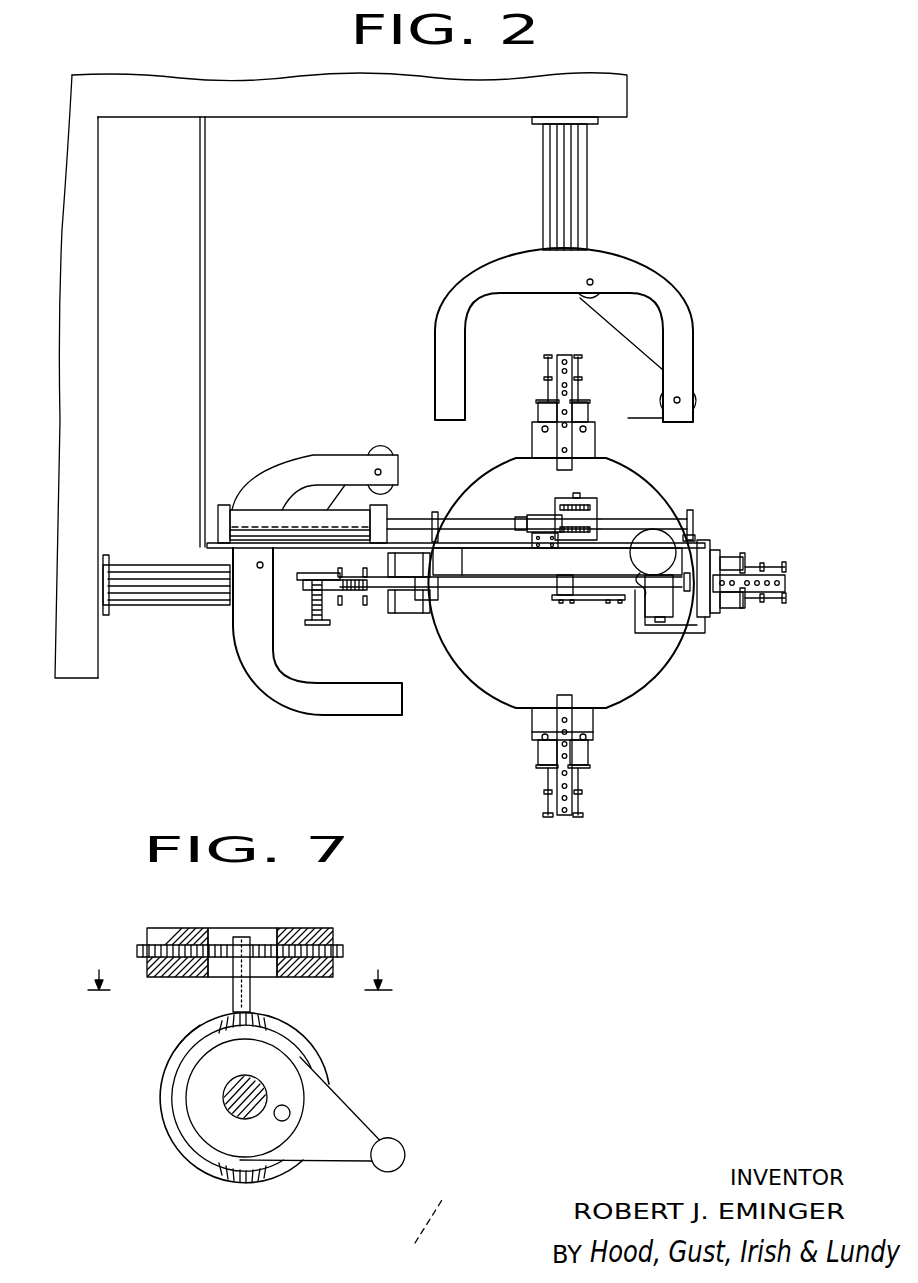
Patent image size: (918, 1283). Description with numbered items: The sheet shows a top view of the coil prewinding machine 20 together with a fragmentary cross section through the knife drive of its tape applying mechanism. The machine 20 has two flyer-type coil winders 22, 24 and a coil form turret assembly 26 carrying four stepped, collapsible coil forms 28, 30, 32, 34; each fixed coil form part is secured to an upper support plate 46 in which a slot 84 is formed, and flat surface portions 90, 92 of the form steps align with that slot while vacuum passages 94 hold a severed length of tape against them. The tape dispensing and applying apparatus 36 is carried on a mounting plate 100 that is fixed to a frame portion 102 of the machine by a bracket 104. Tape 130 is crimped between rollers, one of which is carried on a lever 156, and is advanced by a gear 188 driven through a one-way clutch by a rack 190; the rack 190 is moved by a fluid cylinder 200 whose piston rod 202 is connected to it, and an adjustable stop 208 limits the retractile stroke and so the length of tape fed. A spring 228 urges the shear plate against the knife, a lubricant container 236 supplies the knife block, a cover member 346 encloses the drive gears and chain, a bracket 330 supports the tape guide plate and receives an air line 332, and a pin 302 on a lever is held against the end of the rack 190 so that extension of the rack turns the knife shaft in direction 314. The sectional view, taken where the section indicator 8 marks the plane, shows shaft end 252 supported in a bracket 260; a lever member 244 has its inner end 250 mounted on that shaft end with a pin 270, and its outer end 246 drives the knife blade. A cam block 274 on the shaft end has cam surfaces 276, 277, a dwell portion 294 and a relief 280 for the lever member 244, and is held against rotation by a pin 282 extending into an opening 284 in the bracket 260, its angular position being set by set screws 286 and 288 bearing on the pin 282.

In FIG. 2, the machine 20 is at (292, 193).
In FIG. 2, the frame portion 102 is at (372, 115).
In FIG. 2, the bracket 104 is at (207, 282).
In FIG. 2, the flyer-type coil winder 24 is at (676, 246).
In FIG. 2, the coil form 34 is at (606, 429).
In FIG. 2, the coil form turret assembly 26 is at (470, 700).
In FIG. 2, the upper support plate 46 is at (650, 680).
In FIG. 2, the mounting plate 100 is at (477, 540).
In FIG. 2, the rack 190 is at (632, 518).
In FIG. 2, the pin 302 is at (693, 510).
In FIG. 2, the stop 208 is at (440, 512).
In FIG. 2, the gear 188 is at (597, 496).
In FIG. 2, the cover member 346 is at (548, 574).
In FIG. 2, the tape 130 is at (498, 588).
In FIG. 2, the tape dispensing and applying apparatus 36 is at (528, 606).
In FIG. 2, the lever 156 is at (592, 600).
In FIG. 2, the lubricant container 236 is at (640, 553).
In FIG. 2, the bracket 260 is at (655, 603).
In FIG. 7, the bracket 260 is at (318, 930).
In FIG. 2, the air line 332 is at (700, 633).
In FIG. 2, the bracket 330 is at (710, 540).
In FIG. 2, the coil form 32 is at (766, 542).
In FIG. 2, the vacuum passages 94 is at (777, 586).
In FIG. 2, the fluid cylinder 200 is at (258, 512).
In FIG. 2, the piston rod 202 is at (410, 512).
In FIG. 2, the flyer-type coil winder 22 is at (218, 633).
In FIG. 2, the spring 228 is at (277, 590).
In FIG. 2, the coil form 28 is at (360, 620).
In FIG. 2, the slot 84 is at (567, 720).
In FIG. 2, the coil form 30 is at (609, 725).
In FIG. 2, the flat surface portion 90 is at (574, 782).
In FIG. 2, the flat surface portion 92 is at (577, 806).
In FIG. 7, the set screw 286 is at (190, 945).
In FIG. 7, the opening 284 is at (263, 930).
In FIG. 7, the set screw 288 is at (333, 932).
In FIG. 7, the section line 8- 8 is at (240, 966).
In FIG. 7, the pin 282 is at (251, 997).
In FIG. 7, the cam surface 276 is at (237, 1016).
In FIG. 7, the cam surface 277 is at (236, 1182).
In FIG. 7, the cam block 274 is at (165, 1130).
In FIG. 7, the dwell portion 294 is at (192, 1036).
In FIG. 7, the relief 280 is at (305, 1052).
In FIG. 7, the inner end 250 is at (197, 1168).
In FIG. 7, the shaft end 252 is at (230, 1098).
In FIG. 7, the lever member 244 is at (325, 1108).
In FIG. 7, the outer end 246 is at (423, 1143).
In FIG. 7, the pin 270 is at (290, 1118).
In FIG. 7, the direction arrow 314 is at (455, 1228).